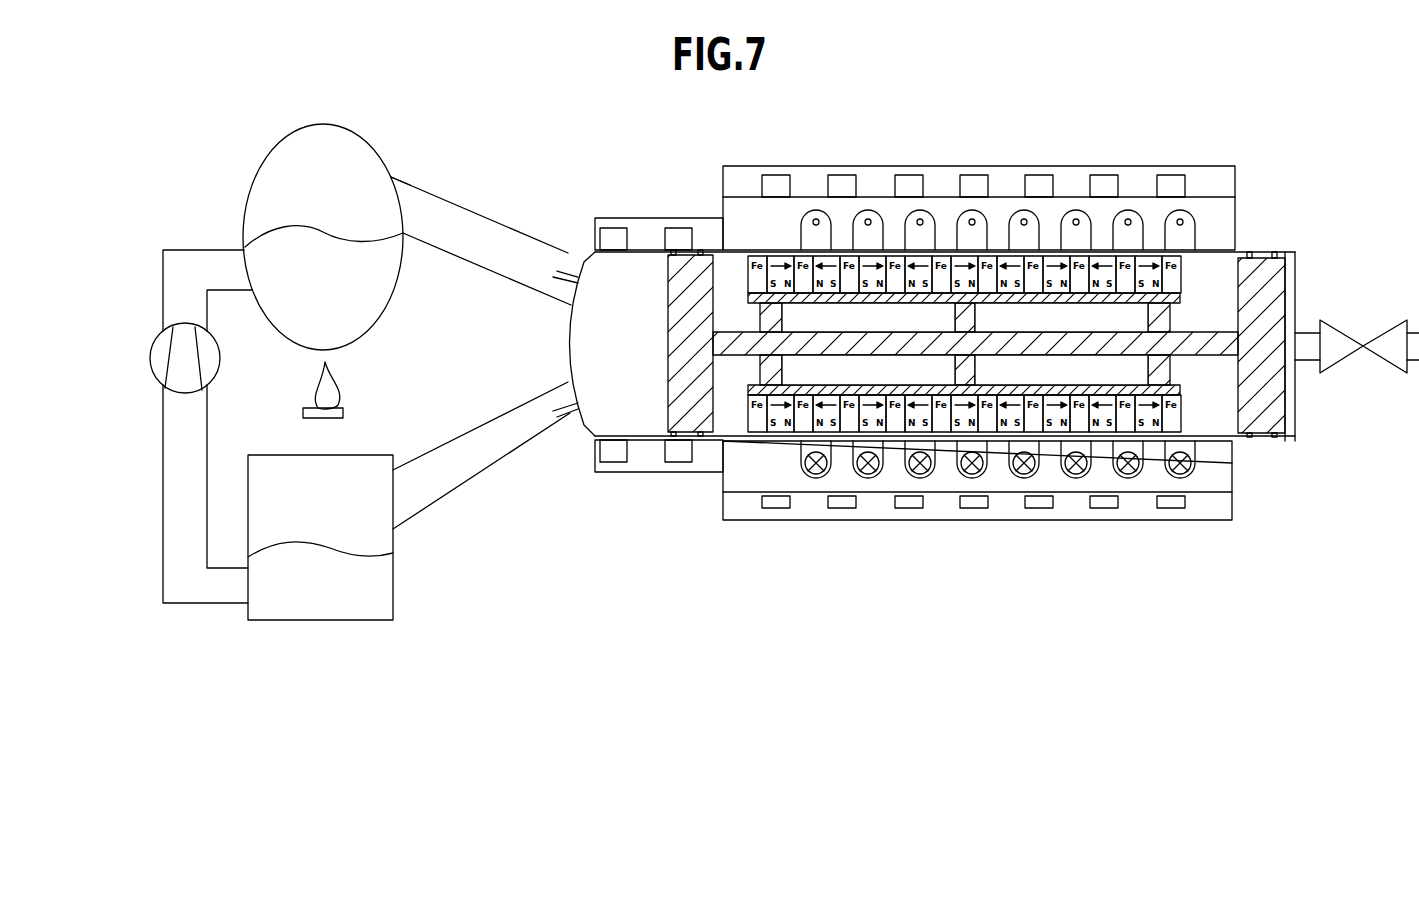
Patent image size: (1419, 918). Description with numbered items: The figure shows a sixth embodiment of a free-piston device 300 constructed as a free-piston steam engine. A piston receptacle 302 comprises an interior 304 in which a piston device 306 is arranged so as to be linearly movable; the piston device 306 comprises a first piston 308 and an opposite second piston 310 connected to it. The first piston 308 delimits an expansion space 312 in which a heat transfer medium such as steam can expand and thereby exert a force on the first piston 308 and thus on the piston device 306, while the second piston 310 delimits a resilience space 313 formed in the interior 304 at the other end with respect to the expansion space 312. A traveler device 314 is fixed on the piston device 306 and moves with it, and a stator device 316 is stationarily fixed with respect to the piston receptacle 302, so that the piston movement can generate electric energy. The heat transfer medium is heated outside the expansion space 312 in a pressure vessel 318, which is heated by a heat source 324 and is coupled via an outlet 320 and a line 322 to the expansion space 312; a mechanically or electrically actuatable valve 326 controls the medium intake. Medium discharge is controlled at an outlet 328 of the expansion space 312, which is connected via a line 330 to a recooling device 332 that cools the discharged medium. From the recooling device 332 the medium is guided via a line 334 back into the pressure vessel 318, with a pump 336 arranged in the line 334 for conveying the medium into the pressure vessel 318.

The free-piston device 300 is at (1126, 146).
The piston receptacle 302 is at (644, 245).
The interior 304 is at (1216, 388).
The piston device 306 is at (696, 400).
The first piston 308 is at (682, 280).
The second piston 310 is at (1263, 277).
The expansion space 312 is at (637, 400).
The resilience space 313 is at (1288, 290).
The traveler device 314 is at (970, 324).
The stator device 316 is at (899, 470).
The pressure vessel 318 is at (285, 192).
The outlet 320 is at (400, 185).
The line for heat transfer medium 322 is at (487, 243).
The heat source 324 is at (338, 406).
The valve 326 is at (582, 260).
The outlet of the expansion space 328 is at (576, 420).
The line 330 is at (568, 393).
The recooling device 332 is at (332, 603).
The line 334 is at (196, 302).
The pump 336 is at (207, 370).